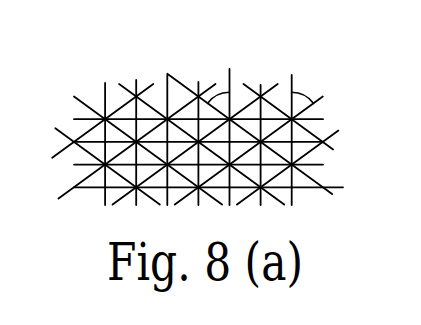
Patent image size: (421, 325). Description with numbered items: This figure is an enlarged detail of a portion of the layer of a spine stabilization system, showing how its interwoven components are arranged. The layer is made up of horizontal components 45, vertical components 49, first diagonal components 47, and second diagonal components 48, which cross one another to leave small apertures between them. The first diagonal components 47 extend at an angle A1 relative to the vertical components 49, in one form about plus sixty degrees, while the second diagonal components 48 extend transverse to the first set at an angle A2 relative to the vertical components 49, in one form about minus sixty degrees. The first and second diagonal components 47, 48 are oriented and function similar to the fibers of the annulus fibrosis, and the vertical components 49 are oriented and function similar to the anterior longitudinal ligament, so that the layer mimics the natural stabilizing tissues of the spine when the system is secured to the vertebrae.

The horizontal components 45 is at (306, 189).
The first diagonal components 47 is at (182, 79).
The second diagonal components 48 is at (335, 140).
The vertical components 49 is at (236, 93).
The angle A1 is at (298, 94).
The angle A2 is at (210, 93).